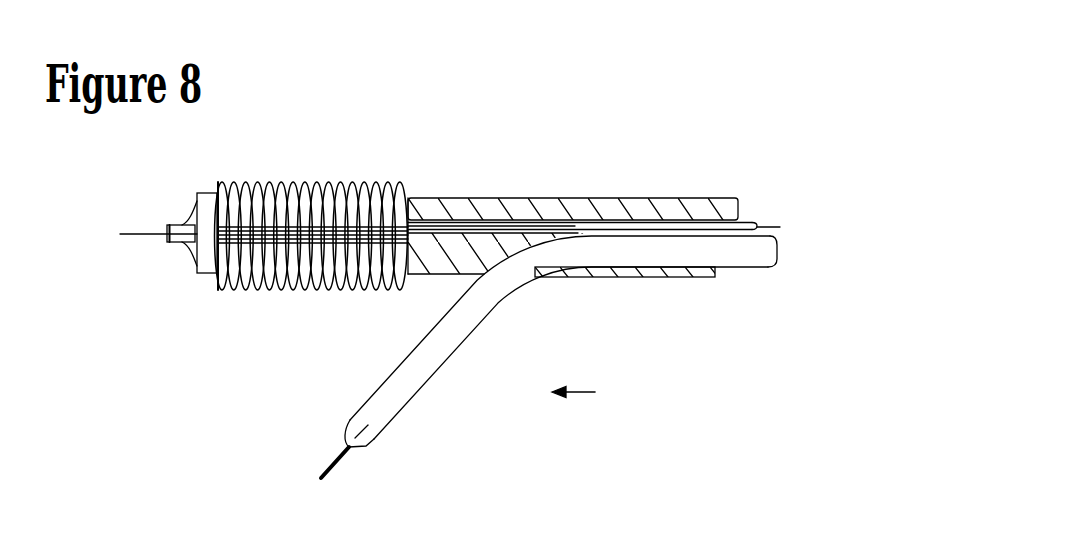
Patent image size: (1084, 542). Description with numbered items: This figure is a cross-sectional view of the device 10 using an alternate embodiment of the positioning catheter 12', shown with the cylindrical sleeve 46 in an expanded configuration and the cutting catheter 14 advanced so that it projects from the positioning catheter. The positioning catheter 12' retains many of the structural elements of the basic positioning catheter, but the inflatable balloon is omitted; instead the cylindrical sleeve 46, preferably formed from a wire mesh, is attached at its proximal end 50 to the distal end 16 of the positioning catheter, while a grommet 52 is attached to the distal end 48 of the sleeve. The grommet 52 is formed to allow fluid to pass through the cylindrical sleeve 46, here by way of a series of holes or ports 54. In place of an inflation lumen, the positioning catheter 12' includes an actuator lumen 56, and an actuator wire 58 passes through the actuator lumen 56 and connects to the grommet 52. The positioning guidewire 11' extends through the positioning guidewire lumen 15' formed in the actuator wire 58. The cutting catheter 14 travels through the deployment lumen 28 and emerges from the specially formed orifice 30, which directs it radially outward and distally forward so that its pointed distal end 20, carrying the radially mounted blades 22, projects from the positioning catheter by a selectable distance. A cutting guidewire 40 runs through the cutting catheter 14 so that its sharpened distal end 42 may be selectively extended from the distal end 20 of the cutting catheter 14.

The device 10 is at (452, 90).
The positioning guidewire 11' is at (140, 267).
The positioning catheter 12' is at (573, 156).
The cutting catheter 14 is at (697, 250).
The positioning guidewire lumen 15' is at (511, 197).
The distal end 16 is at (424, 198).
The distal end 20 is at (390, 410).
The blades 22 is at (647, 252).
The deployment lumen 28 is at (567, 252).
The orifice 30 is at (503, 270).
The cutting guidewire 40 is at (340, 462).
The distal end 42 is at (322, 473).
The cylindrical sleeve 46 is at (290, 295).
The distal end 48 is at (233, 297).
The proximal end 50 is at (398, 300).
The grommet 52 is at (203, 275).
The ports 54 is at (185, 220).
The actuator lumen 56 is at (615, 198).
The actuator wire 58 is at (332, 200).